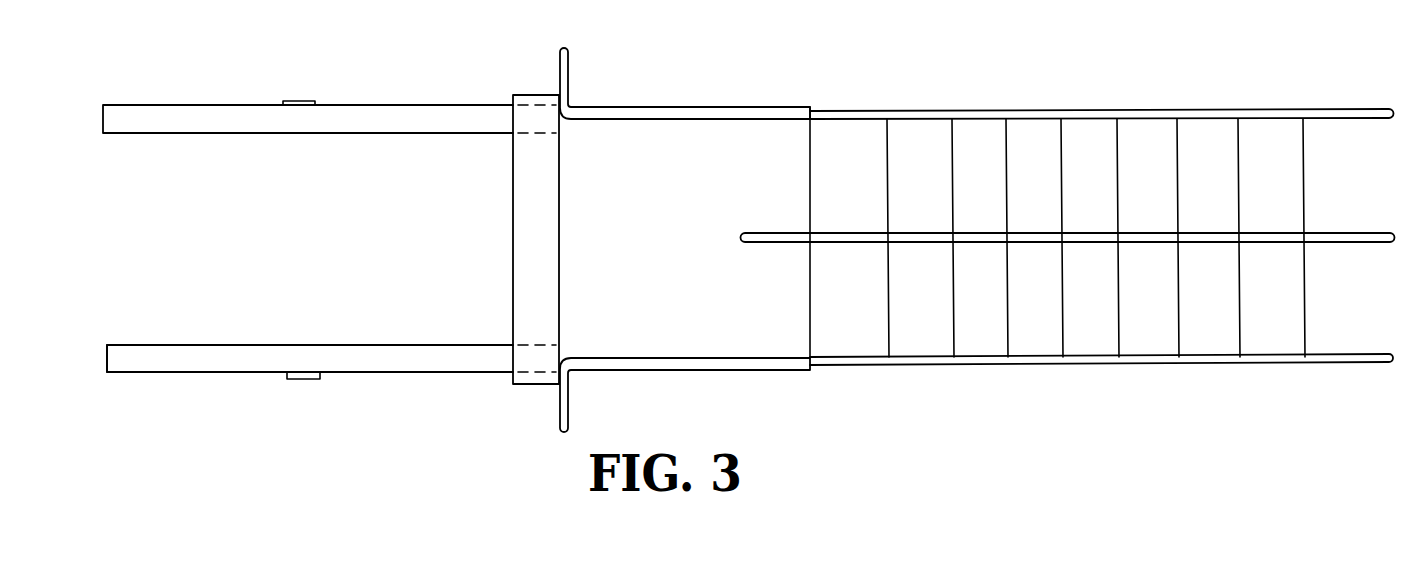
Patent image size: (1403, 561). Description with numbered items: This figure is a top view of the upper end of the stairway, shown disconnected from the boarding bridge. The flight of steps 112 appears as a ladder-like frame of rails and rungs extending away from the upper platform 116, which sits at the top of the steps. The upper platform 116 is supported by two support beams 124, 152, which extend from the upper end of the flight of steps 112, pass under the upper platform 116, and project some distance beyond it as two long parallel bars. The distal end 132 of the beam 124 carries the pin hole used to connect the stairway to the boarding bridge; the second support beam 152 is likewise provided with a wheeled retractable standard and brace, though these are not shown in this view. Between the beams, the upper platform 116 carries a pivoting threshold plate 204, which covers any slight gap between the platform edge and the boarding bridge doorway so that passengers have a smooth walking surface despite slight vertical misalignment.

The flight of steps 112 is at (1036, 111).
The upper platform 116 is at (693, 148).
The support beam 124 is at (238, 373).
The distal end 132 is at (107, 357).
The second support beam 152 is at (204, 105).
The pivoting threshold plate 204 is at (513, 236).